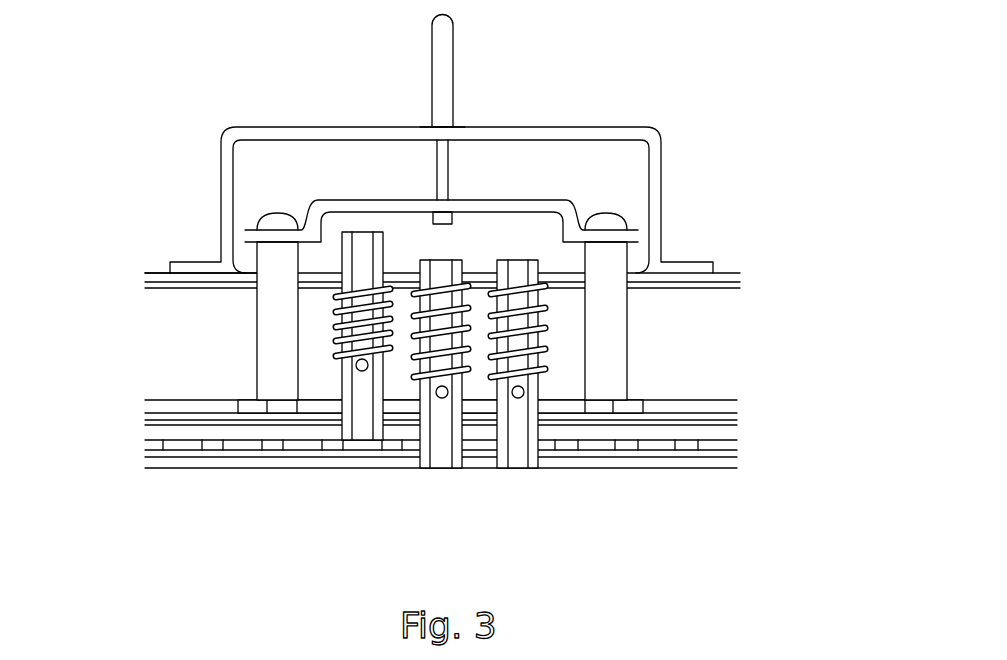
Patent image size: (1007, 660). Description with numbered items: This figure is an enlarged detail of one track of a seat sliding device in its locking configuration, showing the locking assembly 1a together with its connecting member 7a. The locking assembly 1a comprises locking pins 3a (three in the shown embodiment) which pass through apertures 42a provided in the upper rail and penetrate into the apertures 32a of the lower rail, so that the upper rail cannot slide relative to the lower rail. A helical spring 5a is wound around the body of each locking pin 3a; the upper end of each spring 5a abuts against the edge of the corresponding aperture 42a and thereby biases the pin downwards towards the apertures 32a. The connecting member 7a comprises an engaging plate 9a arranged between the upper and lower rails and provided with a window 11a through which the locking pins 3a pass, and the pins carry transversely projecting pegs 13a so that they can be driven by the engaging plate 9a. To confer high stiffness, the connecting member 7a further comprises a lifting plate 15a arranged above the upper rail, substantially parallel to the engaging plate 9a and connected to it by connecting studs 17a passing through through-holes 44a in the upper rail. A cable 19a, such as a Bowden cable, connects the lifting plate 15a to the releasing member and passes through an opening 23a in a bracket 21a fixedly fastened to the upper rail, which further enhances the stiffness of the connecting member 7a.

The locking assembly 1a is at (410, 483).
The locking pin 3a is at (455, 262).
The helical spring 5a is at (343, 337).
The connecting member 7a is at (660, 343).
The engaging plate 9a is at (292, 405).
The window 11a is at (573, 400).
The transversely projecting peg 13a is at (447, 392).
The lifting plate 15a is at (310, 207).
The connecting stud 17a is at (267, 350).
The cable 19a is at (453, 21).
The bracket 21a is at (713, 87).
The opening 23a is at (432, 127).
The aperture of the lower rail 32a is at (443, 446).
The aperture of the upper rail 42a is at (432, 275).
The through-hole 44a is at (260, 277).